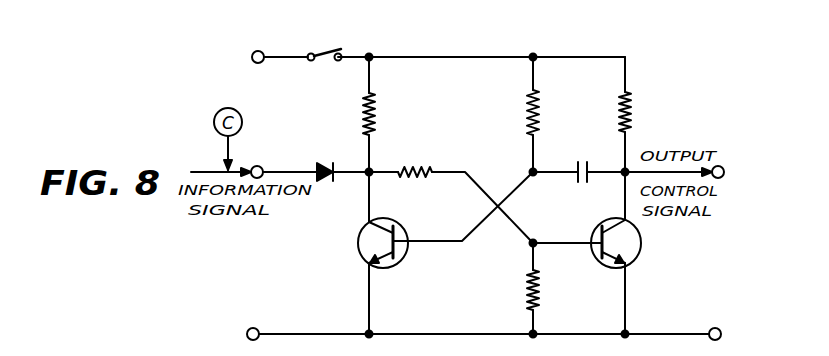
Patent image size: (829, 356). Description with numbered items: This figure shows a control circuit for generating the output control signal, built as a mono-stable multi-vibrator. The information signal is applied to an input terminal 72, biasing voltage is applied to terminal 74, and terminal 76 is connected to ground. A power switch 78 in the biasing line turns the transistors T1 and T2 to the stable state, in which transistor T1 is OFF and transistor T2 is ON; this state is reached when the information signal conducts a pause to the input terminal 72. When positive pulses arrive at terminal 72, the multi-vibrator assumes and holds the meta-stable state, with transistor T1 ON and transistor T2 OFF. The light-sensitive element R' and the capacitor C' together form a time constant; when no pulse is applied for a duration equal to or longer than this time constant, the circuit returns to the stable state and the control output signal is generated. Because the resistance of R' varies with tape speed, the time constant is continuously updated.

The input terminal 72 is at (263, 167).
The terminal 74 is at (261, 50).
The terminal 76 is at (255, 327).
The switch 78 is at (324, 47).
The transistor T1 is at (390, 261).
The transistor T2 is at (630, 262).
The light-sensitive element R' is at (517, 114).
The capacitor C' is at (579, 188).